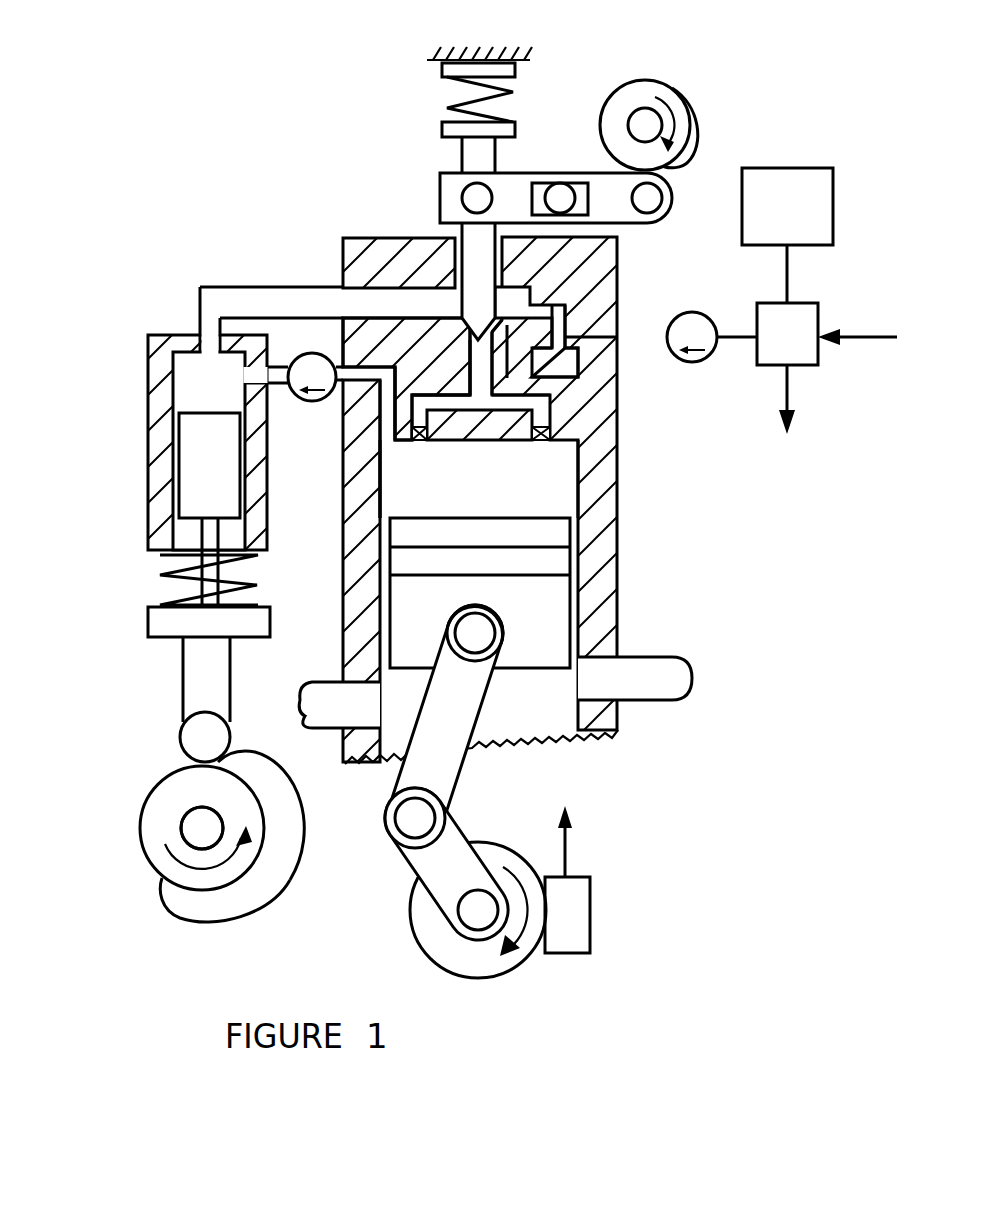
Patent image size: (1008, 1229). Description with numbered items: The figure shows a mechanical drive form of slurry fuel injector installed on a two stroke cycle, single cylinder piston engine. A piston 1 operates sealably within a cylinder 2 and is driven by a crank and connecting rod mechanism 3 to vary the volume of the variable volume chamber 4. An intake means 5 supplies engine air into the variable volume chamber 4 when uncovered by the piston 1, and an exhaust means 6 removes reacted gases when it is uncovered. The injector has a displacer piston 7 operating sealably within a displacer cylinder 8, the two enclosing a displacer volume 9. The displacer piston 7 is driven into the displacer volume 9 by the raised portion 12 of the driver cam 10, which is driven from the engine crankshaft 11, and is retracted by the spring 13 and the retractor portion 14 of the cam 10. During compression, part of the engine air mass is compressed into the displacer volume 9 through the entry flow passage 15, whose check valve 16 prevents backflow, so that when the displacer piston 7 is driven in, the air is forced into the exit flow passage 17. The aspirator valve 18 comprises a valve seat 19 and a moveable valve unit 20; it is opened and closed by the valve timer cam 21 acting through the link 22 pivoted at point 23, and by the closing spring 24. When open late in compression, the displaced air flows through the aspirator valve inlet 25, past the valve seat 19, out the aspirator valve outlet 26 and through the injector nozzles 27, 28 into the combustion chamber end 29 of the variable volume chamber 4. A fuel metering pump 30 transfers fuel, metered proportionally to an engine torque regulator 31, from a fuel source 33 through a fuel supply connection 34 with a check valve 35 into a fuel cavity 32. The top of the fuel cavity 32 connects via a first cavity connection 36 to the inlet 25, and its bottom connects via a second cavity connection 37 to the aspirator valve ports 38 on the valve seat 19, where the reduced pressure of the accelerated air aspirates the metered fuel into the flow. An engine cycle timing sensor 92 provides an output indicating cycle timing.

The piston 1 is at (540, 640).
The cylinder 2 is at (580, 562).
The crank and connecting rod mechanism 3 is at (458, 863).
The variable volume chamber 4 is at (545, 502).
The intake means 5 is at (343, 720).
The exhaust means 6 is at (655, 667).
The displacer piston 7 is at (203, 465).
The displacer cylinder 8 is at (202, 447).
The displacer volume 9 is at (205, 371).
The driver cam 10 is at (175, 797).
The engine crankshaft 11 is at (645, 125).
The raised portion 12 is at (237, 753).
The spring 13 is at (160, 577).
The retractor portion 14 is at (165, 893).
The entry flow passage 15 is at (388, 435).
The check valve 16 is at (305, 398).
The exit flow passage 17 is at (245, 300).
The aspirator valve 18 is at (442, 303).
The valve seat 19 is at (297, 307).
The moveable valve unit 20 is at (482, 230).
The valve timer cam 21 is at (625, 103).
The link 22 is at (512, 198).
The pivot point 23 is at (556, 205).
The closing spring 24 is at (447, 108).
The aspirator valve inlet 25 is at (383, 327).
The aspirator valve outlet 26 is at (490, 400).
The injector nozzle 27 is at (541, 437).
The injector nozzle 28 is at (418, 443).
The combustion chamber end 29 is at (405, 480).
The fuel metering pump 30 is at (797, 337).
The engine torque regulator 31 is at (863, 337).
The fuel cavity 32 is at (553, 367).
The fuel source 33 is at (803, 205).
The fuel supply connection 34 is at (730, 334).
The check valve 35 is at (690, 356).
The first cavity connection 36 is at (530, 300).
The second cavity connection 37 is at (548, 322).
The aspirator valve port 38 is at (510, 357).
The engine cycle timing sensor 92 is at (563, 925).